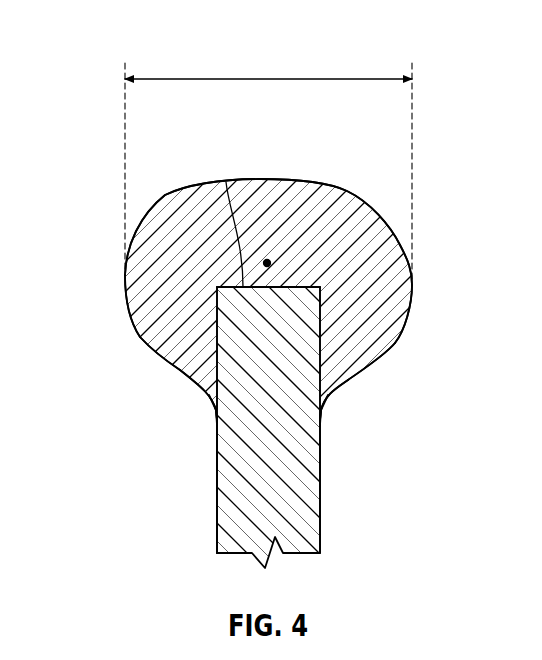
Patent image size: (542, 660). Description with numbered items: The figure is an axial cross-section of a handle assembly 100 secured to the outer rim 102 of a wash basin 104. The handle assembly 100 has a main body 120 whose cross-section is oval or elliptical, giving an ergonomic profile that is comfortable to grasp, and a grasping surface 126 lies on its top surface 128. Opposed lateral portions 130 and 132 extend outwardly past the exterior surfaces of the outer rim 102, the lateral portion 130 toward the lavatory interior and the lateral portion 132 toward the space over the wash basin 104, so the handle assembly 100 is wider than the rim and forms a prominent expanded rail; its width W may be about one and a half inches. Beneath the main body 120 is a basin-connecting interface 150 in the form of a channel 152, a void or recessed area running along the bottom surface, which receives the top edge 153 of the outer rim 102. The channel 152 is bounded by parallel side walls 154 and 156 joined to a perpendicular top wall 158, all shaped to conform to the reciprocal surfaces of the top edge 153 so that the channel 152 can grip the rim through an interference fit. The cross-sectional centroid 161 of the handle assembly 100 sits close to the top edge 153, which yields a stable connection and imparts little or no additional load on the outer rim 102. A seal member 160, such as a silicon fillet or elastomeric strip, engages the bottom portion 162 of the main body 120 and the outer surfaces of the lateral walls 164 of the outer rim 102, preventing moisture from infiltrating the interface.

The handle assembly 100 is at (370, 176).
The outer rim 102 is at (279, 493).
The wash basin 104 is at (203, 484).
The main body 120 is at (396, 213).
The grasping surface 126 is at (198, 184).
The top surface 128 is at (293, 183).
The lateral portion 130 is at (414, 283).
The lateral portion 132 is at (124, 283).
The basin-connecting interface 150 is at (217, 320).
The channel 152 is at (320, 320).
The top edge 153 is at (282, 302).
The side wall 154 is at (215, 372).
The side wall 156 is at (322, 372).
The top wall 158 is at (226, 182).
The seal member 160 is at (209, 398).
The cross-sectional centroid 161 is at (270, 263).
The bottom portion 162 is at (217, 350).
The lateral walls 164 is at (217, 452).
The width W is at (266, 79).